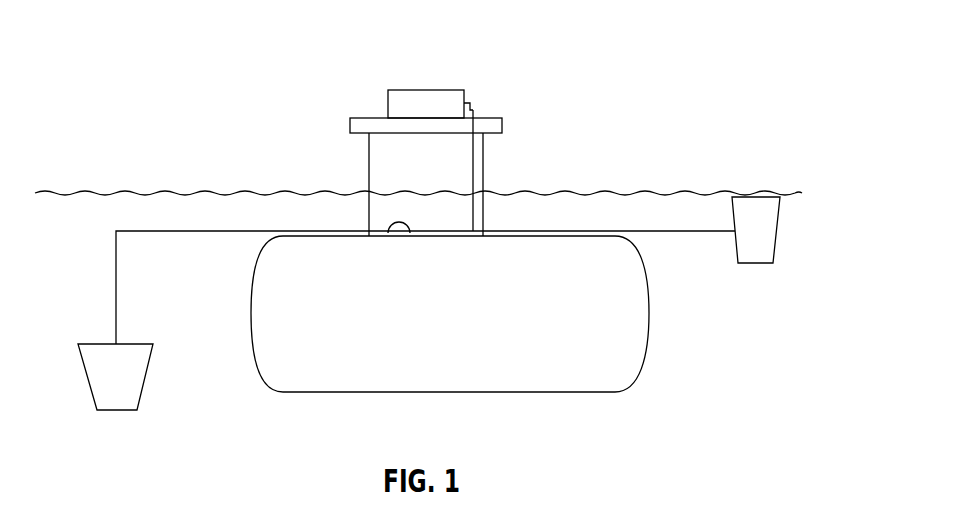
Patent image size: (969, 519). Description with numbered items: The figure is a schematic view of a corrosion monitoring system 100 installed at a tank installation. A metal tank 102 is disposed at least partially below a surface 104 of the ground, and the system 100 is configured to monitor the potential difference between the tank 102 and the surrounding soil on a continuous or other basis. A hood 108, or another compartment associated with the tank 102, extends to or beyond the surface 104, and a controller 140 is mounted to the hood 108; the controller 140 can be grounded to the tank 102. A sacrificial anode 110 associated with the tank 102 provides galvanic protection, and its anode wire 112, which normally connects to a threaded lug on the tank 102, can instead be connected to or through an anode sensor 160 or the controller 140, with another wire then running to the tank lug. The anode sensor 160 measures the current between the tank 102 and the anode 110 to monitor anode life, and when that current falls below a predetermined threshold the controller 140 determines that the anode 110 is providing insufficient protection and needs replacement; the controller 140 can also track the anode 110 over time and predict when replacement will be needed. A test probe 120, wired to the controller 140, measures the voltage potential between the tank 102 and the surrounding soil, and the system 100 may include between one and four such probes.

The monitoring system 100 is at (206, 40).
The tank 102 is at (315, 383).
The surface 104 is at (97, 184).
The hood 108 is at (326, 94).
The anode 110 is at (107, 410).
The anode wire 112 is at (116, 285).
The test probe 120 is at (755, 263).
The controller 140 is at (400, 90).
The anode sensor 160 is at (793, 297).